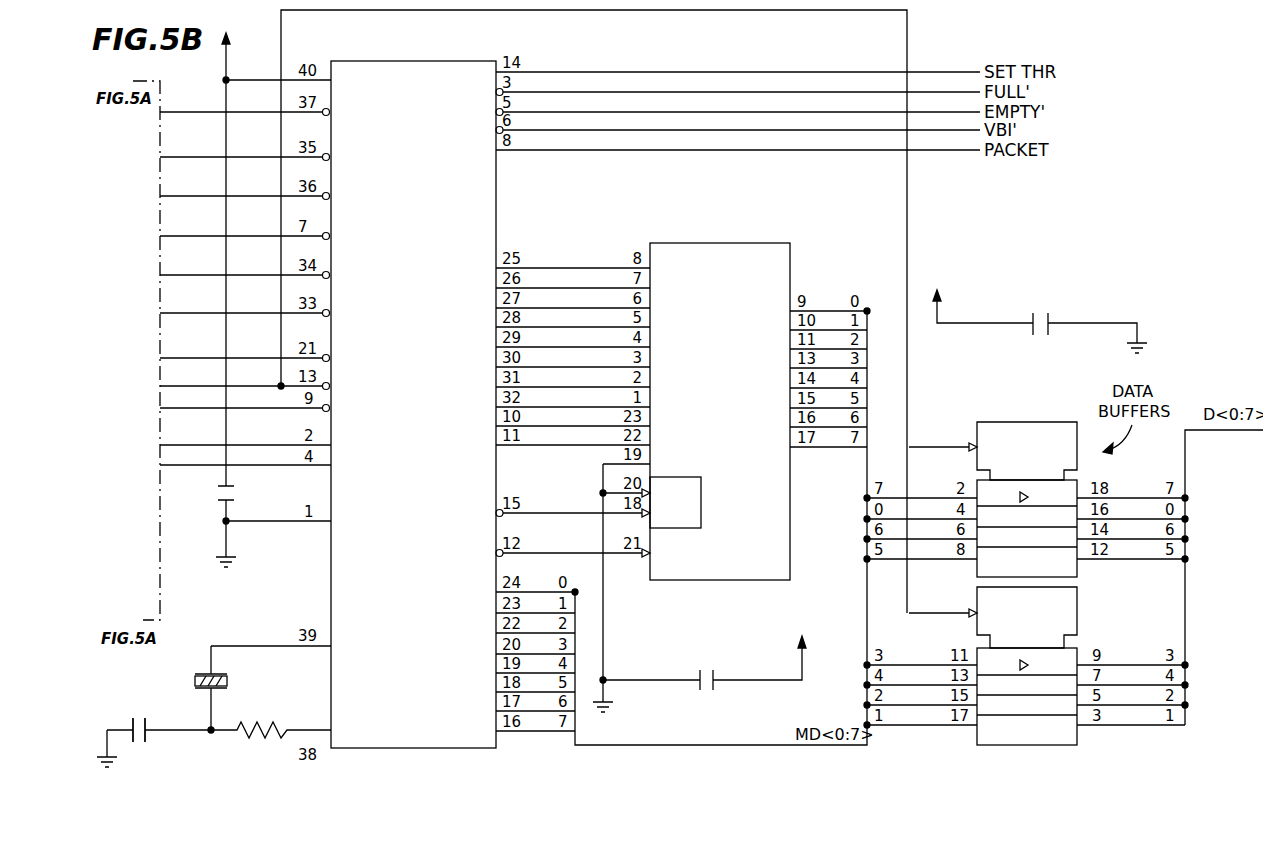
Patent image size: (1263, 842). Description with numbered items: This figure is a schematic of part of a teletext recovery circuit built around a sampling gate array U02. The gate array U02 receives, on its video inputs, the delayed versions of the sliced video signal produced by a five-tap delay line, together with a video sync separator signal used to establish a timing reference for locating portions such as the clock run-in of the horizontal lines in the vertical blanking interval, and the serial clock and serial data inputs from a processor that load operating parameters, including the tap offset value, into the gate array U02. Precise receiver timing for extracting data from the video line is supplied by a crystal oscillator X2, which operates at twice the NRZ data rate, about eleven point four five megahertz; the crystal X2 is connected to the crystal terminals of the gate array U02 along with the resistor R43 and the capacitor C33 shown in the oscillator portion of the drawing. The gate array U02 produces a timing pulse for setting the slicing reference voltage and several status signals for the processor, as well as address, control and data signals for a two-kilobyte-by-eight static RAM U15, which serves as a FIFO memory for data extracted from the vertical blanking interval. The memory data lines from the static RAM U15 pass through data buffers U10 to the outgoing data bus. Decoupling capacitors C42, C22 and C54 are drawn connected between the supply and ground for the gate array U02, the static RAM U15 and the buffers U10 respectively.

The sampling gate array U02 is at (413, 386).
The 2K×8 static RAM U15 is at (720, 393).
The 74HC244 data buffers U10 is at (993, 564).
The 0.1uF capacitor C22 is at (704, 657).
The 0.1uF capacitor C42 is at (269, 521).
The 0.1uF capacitor C54 is at (1040, 311).
The 100pF capacitor C33 is at (135, 710).
The crystal oscillator X2 is at (258, 684).
The 150 ohm resistor R43 is at (271, 746).